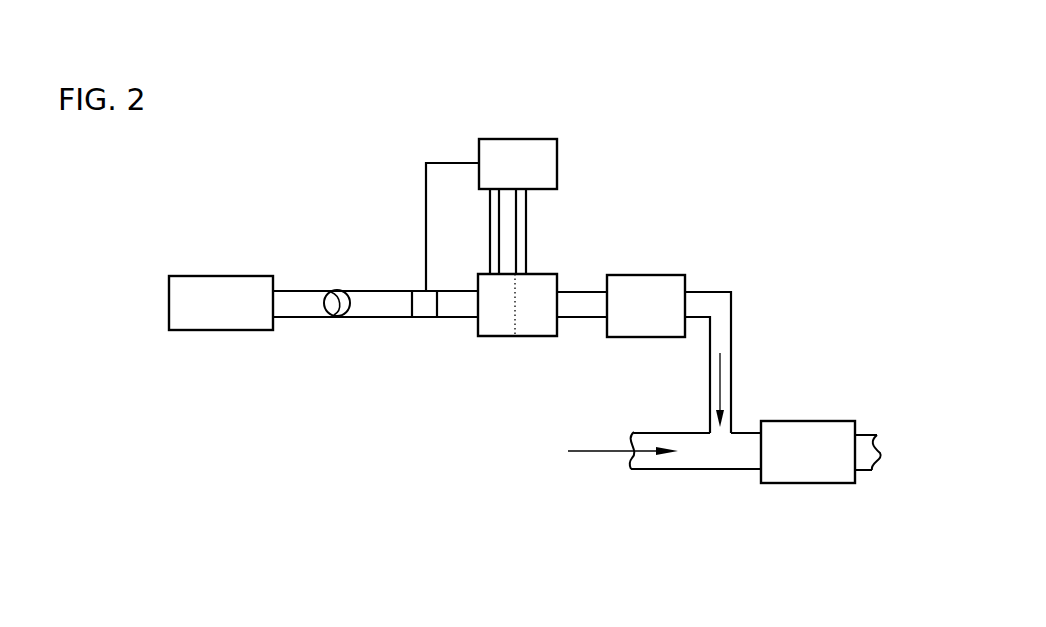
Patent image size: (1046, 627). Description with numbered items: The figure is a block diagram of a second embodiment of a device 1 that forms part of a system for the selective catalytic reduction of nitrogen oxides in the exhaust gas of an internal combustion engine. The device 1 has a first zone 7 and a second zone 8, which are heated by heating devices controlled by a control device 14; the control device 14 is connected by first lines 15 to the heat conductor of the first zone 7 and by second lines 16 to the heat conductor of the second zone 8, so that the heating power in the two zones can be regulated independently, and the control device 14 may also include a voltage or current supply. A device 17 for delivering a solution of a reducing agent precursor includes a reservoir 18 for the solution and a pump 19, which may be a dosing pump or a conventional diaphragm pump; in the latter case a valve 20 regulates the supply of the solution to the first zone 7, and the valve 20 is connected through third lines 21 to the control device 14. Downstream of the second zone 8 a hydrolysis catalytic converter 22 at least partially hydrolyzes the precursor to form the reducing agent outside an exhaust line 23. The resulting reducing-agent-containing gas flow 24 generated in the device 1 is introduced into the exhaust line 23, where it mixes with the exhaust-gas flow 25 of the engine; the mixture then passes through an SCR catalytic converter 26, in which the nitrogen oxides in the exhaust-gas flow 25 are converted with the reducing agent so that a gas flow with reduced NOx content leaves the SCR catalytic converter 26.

The device 1 is at (584, 246).
The first zone 7 is at (490, 337).
The second zone 8 is at (547, 337).
The control device 14 is at (558, 149).
The first lines 15 is at (497, 220).
The second lines 16 is at (517, 236).
The device for delivering a solution of a reducing agent precursor 17 is at (300, 250).
The reservoir 18 is at (220, 332).
The pump 19 is at (337, 318).
The valve 20 is at (423, 318).
The third lines 21 is at (426, 190).
The hydrolysis catalytic converter 22 is at (673, 275).
The exhaust line 23 is at (733, 470).
The reducing-agent-containing gas flow 24 is at (720, 375).
The exhaust-gas flow 25 is at (593, 451).
The SCR catalytic converter 26 is at (833, 483).